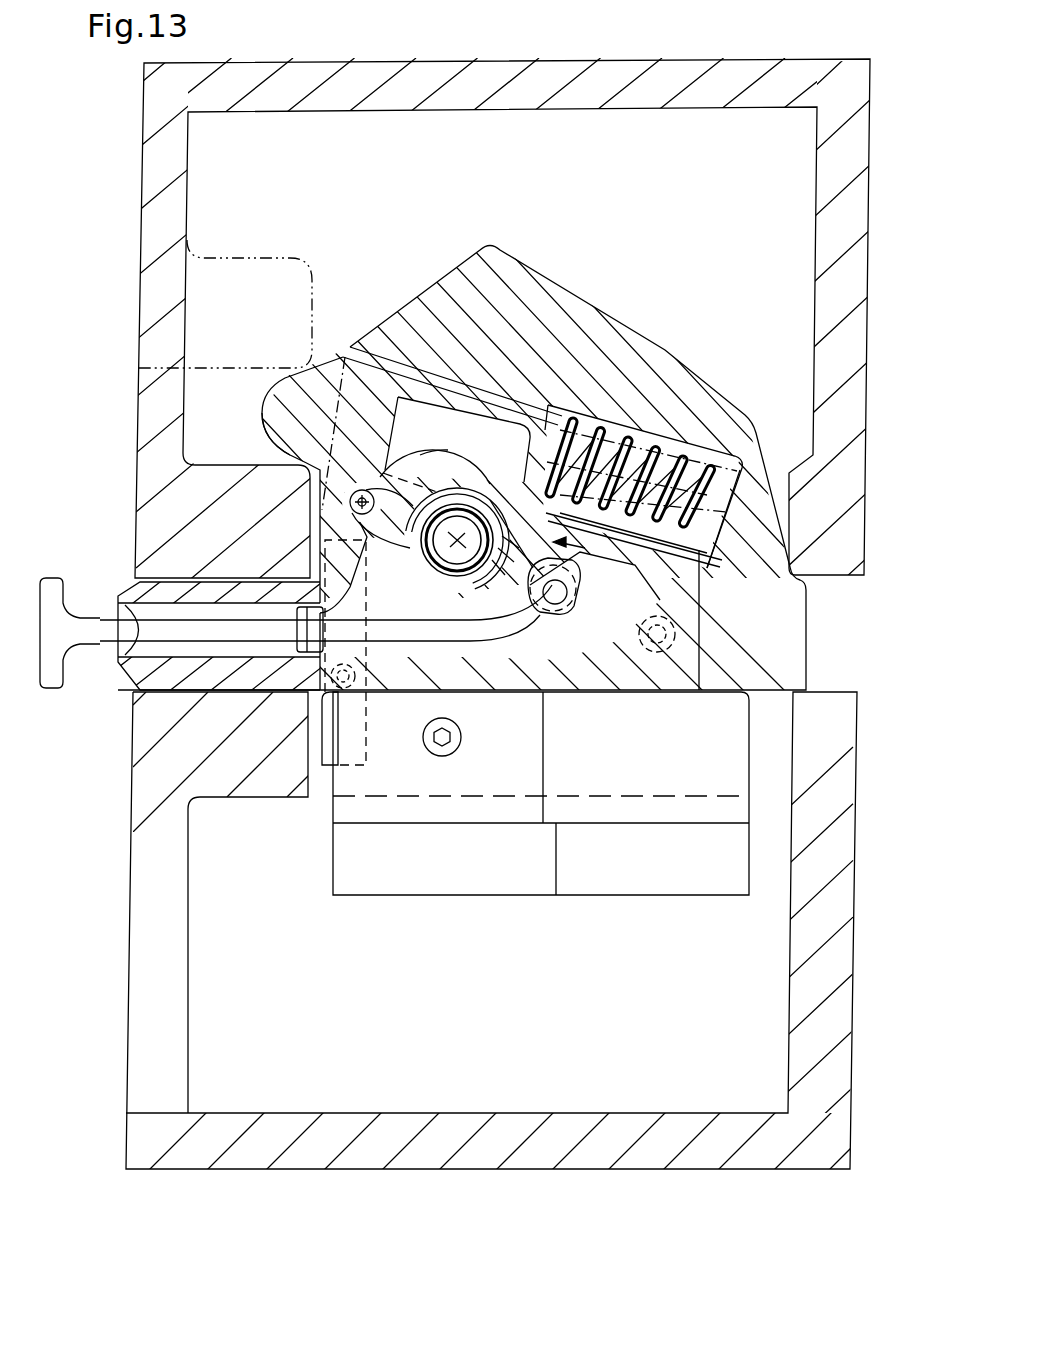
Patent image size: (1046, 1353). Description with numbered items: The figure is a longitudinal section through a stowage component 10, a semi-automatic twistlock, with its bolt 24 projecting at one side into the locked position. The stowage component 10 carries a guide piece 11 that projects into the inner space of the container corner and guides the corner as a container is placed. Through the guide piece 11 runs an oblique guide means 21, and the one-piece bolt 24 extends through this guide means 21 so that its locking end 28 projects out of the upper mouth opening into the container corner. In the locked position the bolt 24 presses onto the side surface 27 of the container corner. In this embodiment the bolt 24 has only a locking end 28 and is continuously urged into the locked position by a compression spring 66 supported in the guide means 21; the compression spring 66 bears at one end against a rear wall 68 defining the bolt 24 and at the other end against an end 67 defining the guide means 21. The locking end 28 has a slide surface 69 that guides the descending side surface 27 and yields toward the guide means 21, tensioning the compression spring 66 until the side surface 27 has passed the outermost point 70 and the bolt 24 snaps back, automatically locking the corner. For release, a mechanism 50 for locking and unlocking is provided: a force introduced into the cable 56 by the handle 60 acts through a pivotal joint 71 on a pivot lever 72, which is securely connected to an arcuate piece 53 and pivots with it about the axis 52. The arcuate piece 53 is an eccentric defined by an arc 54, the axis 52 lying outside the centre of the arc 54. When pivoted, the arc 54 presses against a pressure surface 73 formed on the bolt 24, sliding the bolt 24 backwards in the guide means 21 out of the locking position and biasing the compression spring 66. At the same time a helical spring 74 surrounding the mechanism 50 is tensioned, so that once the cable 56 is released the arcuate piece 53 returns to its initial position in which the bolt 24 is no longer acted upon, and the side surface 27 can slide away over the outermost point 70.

The stowage component 10 is at (623, 311).
The guide piece 11 is at (640, 349).
The guide means 21 is at (648, 392).
The bolt 24 is at (490, 410).
The side surface 27 is at (265, 270).
The locking end 28 is at (262, 401).
The mechanism for locking and unlocking 50 is at (588, 554).
The axis 52 is at (436, 556).
The arcuate piece 53 is at (449, 480).
The arc 54 is at (413, 458).
The cable 56 is at (420, 628).
The handle 60 is at (58, 663).
The compression spring 66 is at (698, 415).
The end 67 is at (735, 535).
The rear wall 68 is at (630, 550).
The slide surface 69 is at (327, 360).
The outermost point 70 is at (265, 418).
The pivotal joint 71 is at (565, 608).
The pivot lever 72 is at (527, 583).
The pressure surface 73 is at (501, 495).
The helical spring 74 is at (380, 517).